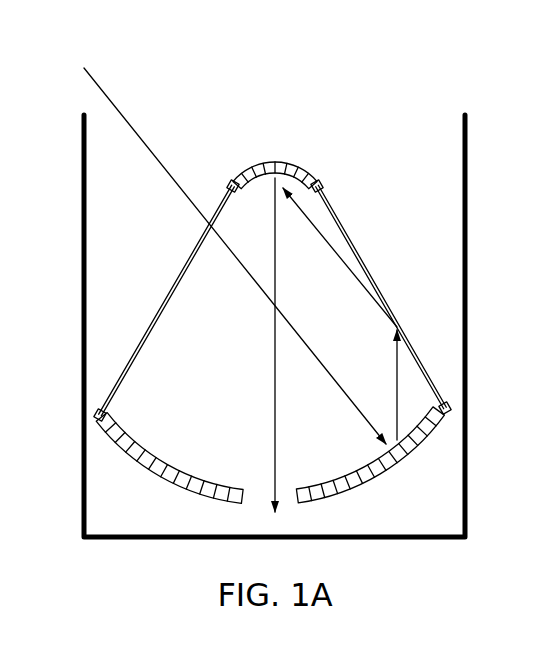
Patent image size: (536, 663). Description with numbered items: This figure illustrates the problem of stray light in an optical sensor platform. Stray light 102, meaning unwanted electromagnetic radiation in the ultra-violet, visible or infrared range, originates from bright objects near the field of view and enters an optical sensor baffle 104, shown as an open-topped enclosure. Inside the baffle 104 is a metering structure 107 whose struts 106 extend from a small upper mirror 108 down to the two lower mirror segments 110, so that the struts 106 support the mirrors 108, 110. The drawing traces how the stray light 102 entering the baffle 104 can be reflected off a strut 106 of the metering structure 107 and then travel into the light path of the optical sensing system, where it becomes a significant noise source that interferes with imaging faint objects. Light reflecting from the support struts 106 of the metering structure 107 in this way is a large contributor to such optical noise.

The stray light 102 is at (124, 119).
The optical sensor baffle 104 is at (467, 128).
The strut 106 is at (353, 246).
The metering structure 107 is at (152, 257).
The mirror 108 is at (298, 163).
The mirror 110 is at (150, 484).